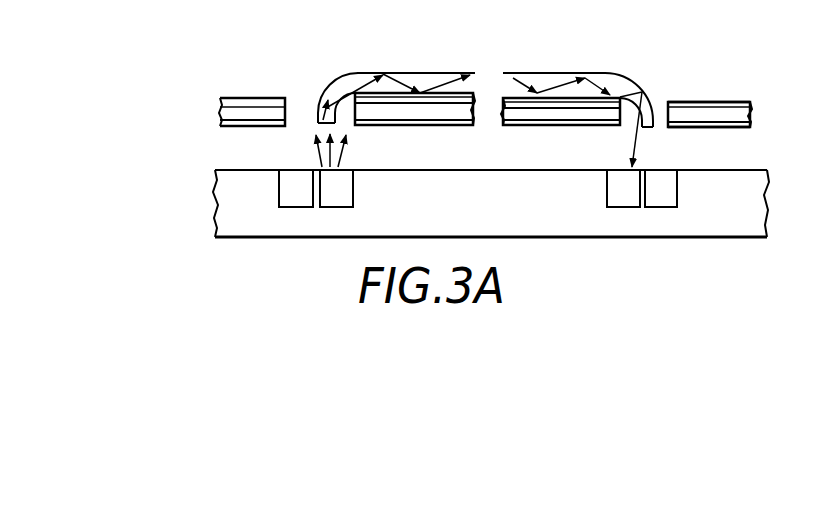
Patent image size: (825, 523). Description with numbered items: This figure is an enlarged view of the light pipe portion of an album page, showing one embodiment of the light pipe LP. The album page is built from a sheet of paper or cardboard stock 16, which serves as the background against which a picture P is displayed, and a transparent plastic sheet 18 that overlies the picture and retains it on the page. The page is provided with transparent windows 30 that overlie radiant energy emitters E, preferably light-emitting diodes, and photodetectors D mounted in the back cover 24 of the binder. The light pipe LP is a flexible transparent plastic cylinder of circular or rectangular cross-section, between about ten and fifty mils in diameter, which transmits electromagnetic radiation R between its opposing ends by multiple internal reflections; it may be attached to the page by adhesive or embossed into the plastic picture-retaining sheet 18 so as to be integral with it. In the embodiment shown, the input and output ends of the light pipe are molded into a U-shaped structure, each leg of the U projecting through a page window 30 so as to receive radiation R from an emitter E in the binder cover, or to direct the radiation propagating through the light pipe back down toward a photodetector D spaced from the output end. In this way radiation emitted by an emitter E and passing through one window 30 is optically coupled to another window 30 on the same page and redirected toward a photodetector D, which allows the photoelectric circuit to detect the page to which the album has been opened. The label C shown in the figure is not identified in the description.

The sheet of paper or cardboard stock 16 is at (735, 117).
The transparent plastic sheet 18 is at (737, 103).
The back cover 24 is at (747, 203).
The transparent windows 30 is at (297, 108).
The picture P is at (210, 108).
The radiation R is at (360, 74).
The curved segment C is at (538, 72).
The light pipe LP is at (578, 66).
The photodetector D is at (459, 188).
The radiant energy emitter E is at (498, 188).